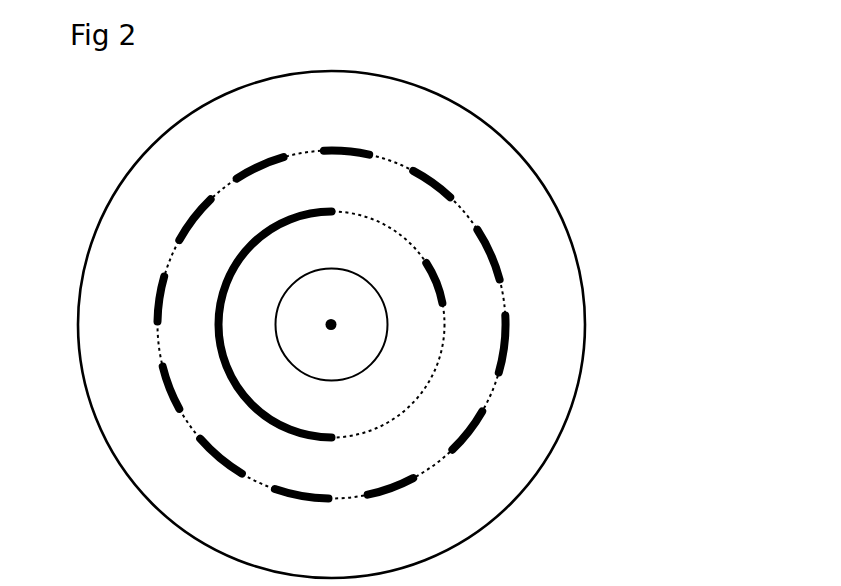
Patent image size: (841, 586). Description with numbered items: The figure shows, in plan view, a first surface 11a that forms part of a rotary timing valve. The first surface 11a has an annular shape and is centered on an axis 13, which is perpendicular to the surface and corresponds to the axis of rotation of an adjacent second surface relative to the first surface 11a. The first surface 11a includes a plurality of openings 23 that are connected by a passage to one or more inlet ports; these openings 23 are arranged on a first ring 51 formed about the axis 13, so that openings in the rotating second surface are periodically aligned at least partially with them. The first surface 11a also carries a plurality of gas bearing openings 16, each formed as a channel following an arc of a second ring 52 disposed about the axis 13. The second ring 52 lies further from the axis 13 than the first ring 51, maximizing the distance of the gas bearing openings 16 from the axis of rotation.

The first surface 11a is at (552, 270).
The axis 13 is at (330, 325).
The gas bearing openings 16 is at (160, 296).
The openings 23 is at (442, 287).
The first ring 51 is at (433, 373).
The second ring 52 is at (493, 395).